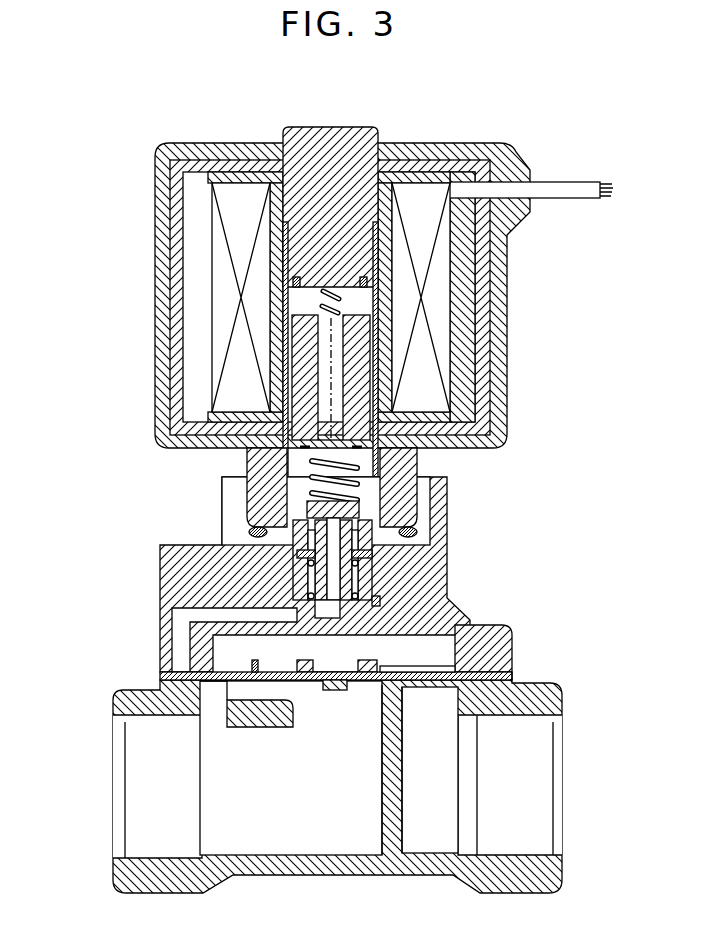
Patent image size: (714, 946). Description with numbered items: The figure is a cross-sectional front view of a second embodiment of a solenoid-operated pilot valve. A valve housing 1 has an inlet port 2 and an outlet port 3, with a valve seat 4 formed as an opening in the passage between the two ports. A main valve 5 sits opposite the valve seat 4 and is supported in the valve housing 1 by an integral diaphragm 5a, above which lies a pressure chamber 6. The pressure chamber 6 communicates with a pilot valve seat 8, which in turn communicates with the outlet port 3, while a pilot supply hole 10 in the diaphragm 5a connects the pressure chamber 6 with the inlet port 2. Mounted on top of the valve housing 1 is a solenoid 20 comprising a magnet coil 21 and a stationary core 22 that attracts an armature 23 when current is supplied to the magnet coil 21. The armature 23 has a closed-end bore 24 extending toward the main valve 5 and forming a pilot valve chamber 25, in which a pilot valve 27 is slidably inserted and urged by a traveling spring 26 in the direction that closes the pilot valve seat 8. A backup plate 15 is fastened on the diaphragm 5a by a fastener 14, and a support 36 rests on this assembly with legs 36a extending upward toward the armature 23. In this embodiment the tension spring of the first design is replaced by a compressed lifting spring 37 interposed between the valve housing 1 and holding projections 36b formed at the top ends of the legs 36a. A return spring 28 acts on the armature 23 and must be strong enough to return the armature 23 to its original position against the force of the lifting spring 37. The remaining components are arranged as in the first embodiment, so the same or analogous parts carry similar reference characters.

The valve housing 1 is at (522, 648).
The inlet port 2 is at (565, 793).
The outlet port 3 is at (133, 791).
The valve seat 4 is at (293, 700).
The main valve 5 is at (367, 681).
The diaphragm 5a is at (513, 673).
The pressure chamber 6 is at (447, 650).
The pilot valve seat 8 is at (250, 522).
The pilot supply hole 10 is at (437, 678).
The fastener 14 is at (335, 690).
The backup plate 15 is at (250, 662).
The solenoid 20 is at (475, 121).
The magnet coil 21 is at (433, 309).
The stationary core 22 is at (333, 138).
The armature 23 is at (360, 369).
The closed-end bore 24 is at (305, 466).
The pilot valve chamber 25 is at (380, 525).
The traveling spring 26 is at (380, 468).
The pilot valve 27 is at (360, 508).
The return spring 28 is at (318, 362).
The support 36 is at (398, 703).
The legs 36a is at (380, 604).
The holding projections 36b is at (380, 556).
The lifting spring 37 is at (360, 573).